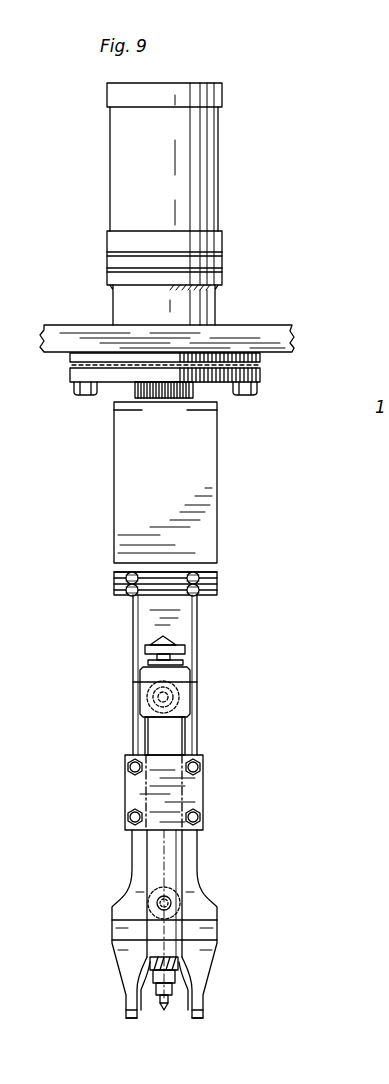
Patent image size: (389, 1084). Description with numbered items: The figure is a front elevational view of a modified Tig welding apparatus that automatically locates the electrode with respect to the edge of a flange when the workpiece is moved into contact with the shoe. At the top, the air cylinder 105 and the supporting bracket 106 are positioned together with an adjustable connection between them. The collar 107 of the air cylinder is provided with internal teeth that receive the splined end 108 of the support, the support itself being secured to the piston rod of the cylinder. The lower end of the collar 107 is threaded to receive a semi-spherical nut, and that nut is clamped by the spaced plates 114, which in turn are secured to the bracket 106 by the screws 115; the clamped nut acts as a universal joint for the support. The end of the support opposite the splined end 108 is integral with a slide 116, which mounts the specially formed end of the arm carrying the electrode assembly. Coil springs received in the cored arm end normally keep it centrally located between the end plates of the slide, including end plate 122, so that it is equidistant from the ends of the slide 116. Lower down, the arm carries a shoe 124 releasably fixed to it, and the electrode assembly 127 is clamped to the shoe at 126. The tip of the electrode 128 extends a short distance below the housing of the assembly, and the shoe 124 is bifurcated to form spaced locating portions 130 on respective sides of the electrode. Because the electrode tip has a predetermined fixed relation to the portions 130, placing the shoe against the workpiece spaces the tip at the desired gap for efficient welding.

The air cylinder 105 is at (212, 185).
The supporting bracket 106 is at (90, 330).
The collar 107 is at (203, 305).
The splined end 108 is at (196, 392).
The spaced plates 114 is at (70, 373).
The screws 115 is at (82, 393).
The slide 116 is at (122, 528).
The end plate 122 is at (158, 592).
The shoe 124 is at (123, 863).
The clamp 126 is at (175, 793).
The electrode assembly 127 is at (172, 868).
The electrode 128 is at (164, 1008).
The locating portions 130 is at (126, 1008).